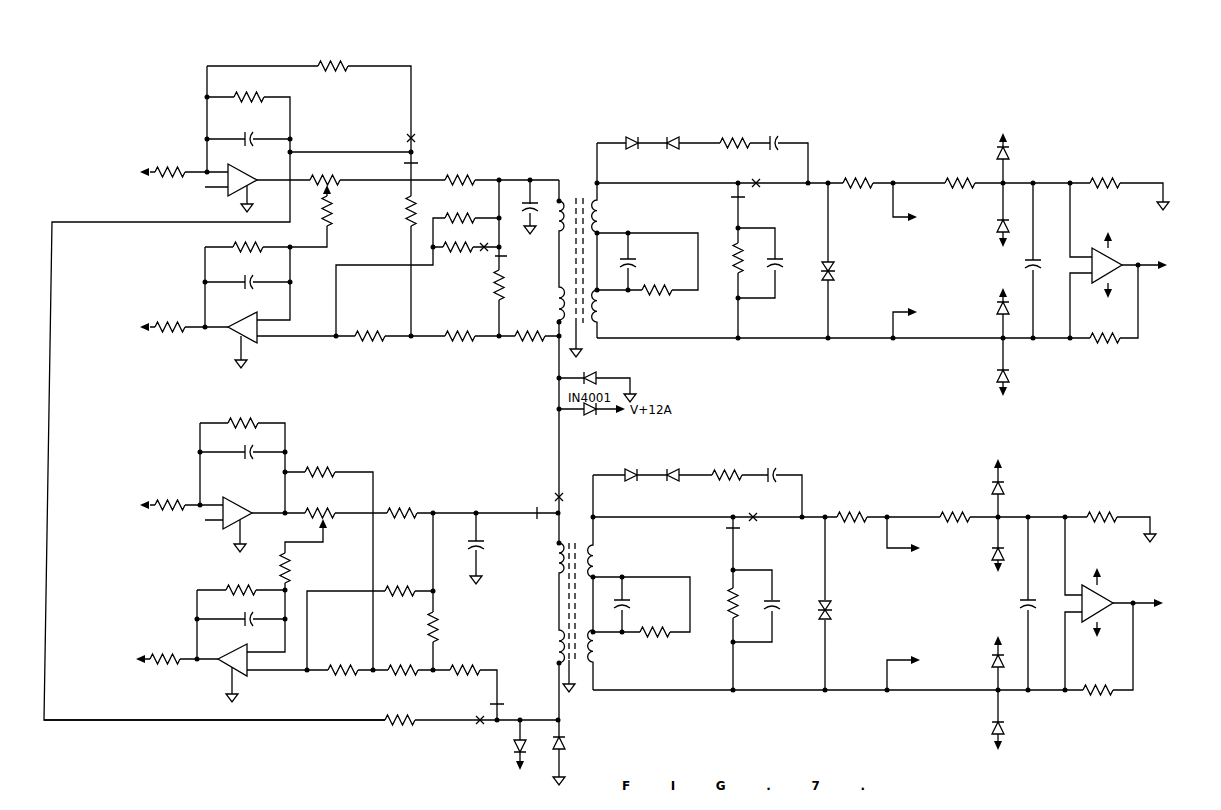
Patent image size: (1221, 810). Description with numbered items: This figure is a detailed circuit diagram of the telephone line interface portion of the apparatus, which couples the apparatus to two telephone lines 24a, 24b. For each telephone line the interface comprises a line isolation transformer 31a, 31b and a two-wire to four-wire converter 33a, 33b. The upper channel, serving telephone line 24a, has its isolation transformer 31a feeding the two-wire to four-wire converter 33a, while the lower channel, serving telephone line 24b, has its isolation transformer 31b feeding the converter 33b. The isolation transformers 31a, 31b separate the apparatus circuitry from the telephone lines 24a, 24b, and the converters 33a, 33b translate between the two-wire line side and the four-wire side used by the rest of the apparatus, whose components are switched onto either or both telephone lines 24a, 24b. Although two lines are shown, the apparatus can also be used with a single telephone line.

The line isolation transformer 31a is at (561, 243).
The line isolation transformer 31b is at (564, 630).
The 2W/4W converter 33a is at (301, 390).
The 2W/4W converter 33b is at (302, 599).
The telephone line 24a is at (1162, 268).
The telephone line 24b is at (1153, 603).